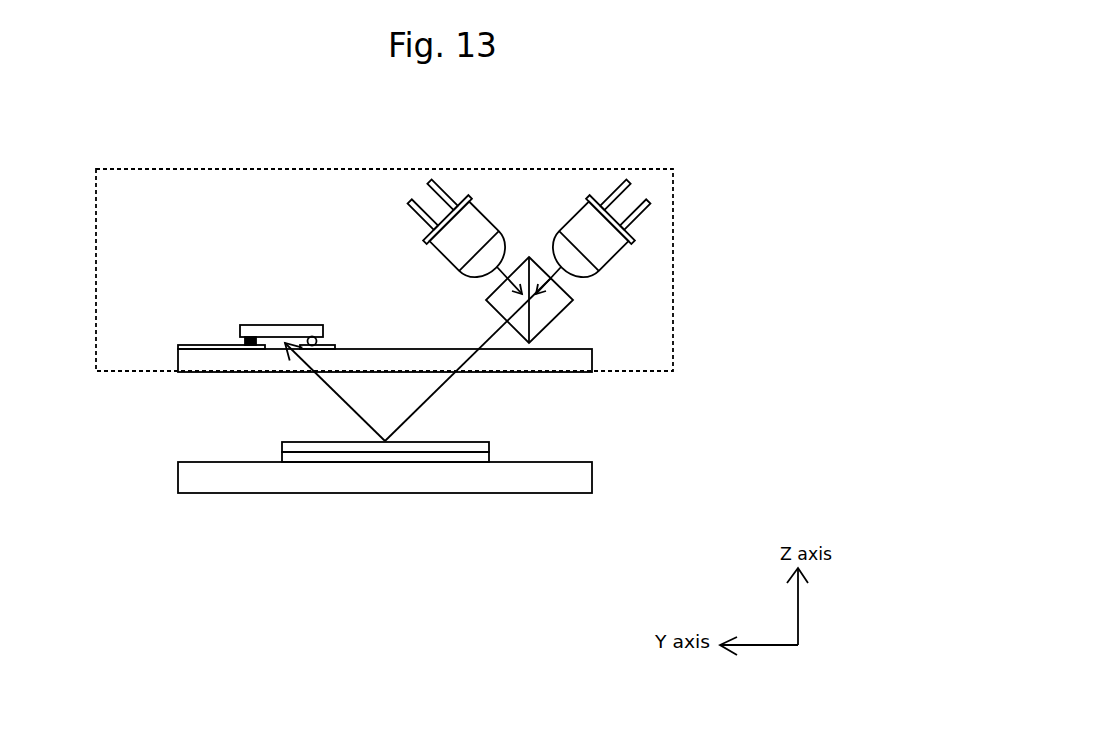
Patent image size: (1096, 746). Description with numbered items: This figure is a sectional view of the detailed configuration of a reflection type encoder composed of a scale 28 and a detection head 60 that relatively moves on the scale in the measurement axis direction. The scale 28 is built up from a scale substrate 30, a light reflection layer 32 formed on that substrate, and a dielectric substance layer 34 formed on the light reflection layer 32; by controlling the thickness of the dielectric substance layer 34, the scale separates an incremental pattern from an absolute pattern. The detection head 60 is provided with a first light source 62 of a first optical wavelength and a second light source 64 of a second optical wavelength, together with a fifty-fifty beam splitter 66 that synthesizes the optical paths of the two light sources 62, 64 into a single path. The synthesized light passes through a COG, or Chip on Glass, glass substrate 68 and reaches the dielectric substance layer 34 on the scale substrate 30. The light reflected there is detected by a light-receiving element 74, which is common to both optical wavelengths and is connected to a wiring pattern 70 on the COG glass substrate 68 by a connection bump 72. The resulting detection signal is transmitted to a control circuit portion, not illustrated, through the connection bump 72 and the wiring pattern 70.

The scale 28 is at (416, 514).
The scale substrate 30 is at (577, 477).
The light reflection layer 32 is at (467, 455).
The dielectric substance layer 34 is at (302, 447).
The detection head 60 is at (673, 227).
The first light source 62 is at (460, 235).
The second light source 64 is at (597, 235).
The 50:50 beam splitter 66 is at (556, 305).
The COG glass substrate 68 is at (577, 362).
The wiring pattern 70 is at (222, 348).
The connection bump 72 is at (250, 345).
The light-receiving element 74 is at (303, 332).